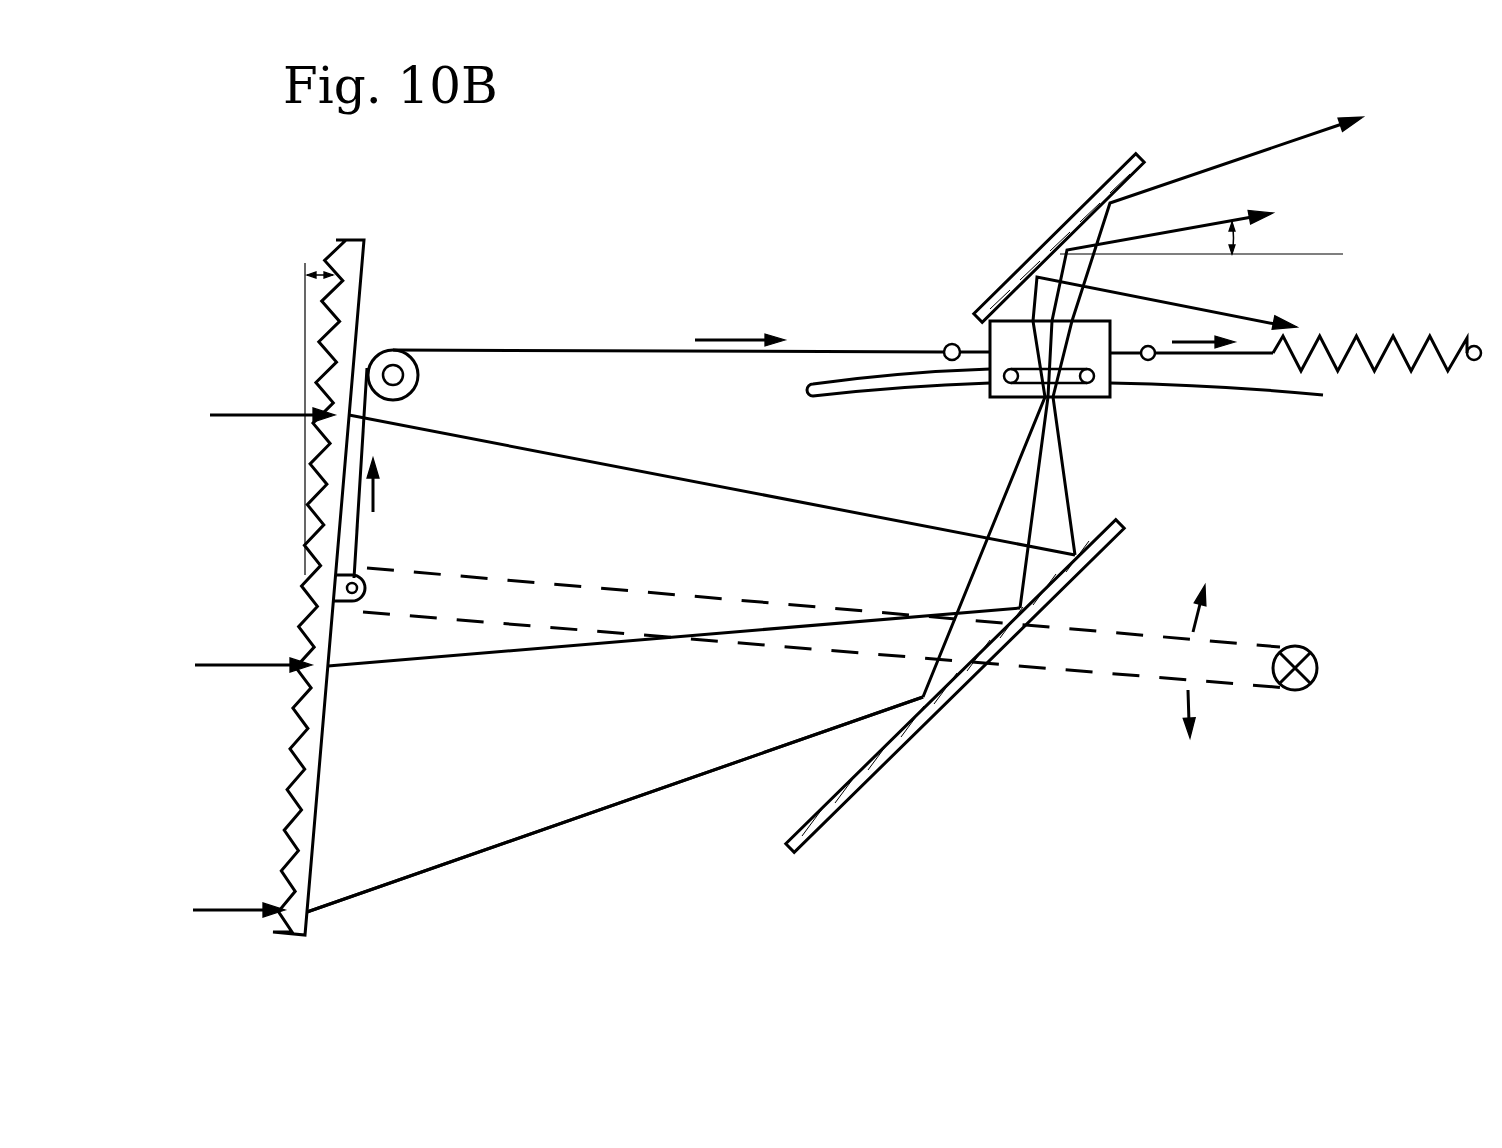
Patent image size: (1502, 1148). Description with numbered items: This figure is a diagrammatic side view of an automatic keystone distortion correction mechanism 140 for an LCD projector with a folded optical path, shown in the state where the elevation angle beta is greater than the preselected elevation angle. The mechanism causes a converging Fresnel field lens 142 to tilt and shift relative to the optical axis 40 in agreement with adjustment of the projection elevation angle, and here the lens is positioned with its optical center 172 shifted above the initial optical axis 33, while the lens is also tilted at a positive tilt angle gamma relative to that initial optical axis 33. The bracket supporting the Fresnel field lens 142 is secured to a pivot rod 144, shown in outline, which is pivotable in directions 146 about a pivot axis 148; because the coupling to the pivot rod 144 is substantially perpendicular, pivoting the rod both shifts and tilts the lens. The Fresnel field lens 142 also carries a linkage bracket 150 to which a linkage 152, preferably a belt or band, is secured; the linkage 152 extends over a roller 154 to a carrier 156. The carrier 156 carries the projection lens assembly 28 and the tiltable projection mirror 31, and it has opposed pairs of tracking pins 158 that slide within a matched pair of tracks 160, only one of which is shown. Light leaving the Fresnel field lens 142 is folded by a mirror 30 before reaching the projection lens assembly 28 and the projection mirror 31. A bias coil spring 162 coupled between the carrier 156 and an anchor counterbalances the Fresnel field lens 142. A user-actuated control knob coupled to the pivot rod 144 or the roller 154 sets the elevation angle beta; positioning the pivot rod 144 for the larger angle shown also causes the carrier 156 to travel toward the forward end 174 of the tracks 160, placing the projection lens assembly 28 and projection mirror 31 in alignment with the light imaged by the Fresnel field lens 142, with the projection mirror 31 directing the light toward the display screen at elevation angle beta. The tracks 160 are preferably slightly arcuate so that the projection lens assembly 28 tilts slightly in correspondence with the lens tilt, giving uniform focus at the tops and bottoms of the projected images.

The projection lens assembly 28 is at (990, 410).
The first mirror 30 is at (912, 735).
The projection mirror 31 is at (1092, 198).
The initial optical axis 33 is at (255, 667).
The optical axis 40 is at (520, 655).
The automatic keystone distortion correction mechanism 140 is at (555, 875).
The Fresnel field lens 142 is at (325, 745).
The pivot rod 144 is at (1093, 675).
The directions 146 is at (1190, 618).
The pivot axis 148 is at (1297, 647).
The linkage bracket 150 is at (352, 600).
The linkage 152 is at (572, 345).
The roller 154 is at (398, 370).
The carrier 156 is at (988, 337).
The tracking pins 158 is at (1090, 368).
The tracks 160 is at (885, 395).
The bias coil spring 162 is at (1397, 333).
The optical center 172 is at (307, 582).
The forward end 174 is at (1108, 378).
The tilt angle gamma is at (325, 268).
The elevation angle beta is at (1234, 240).